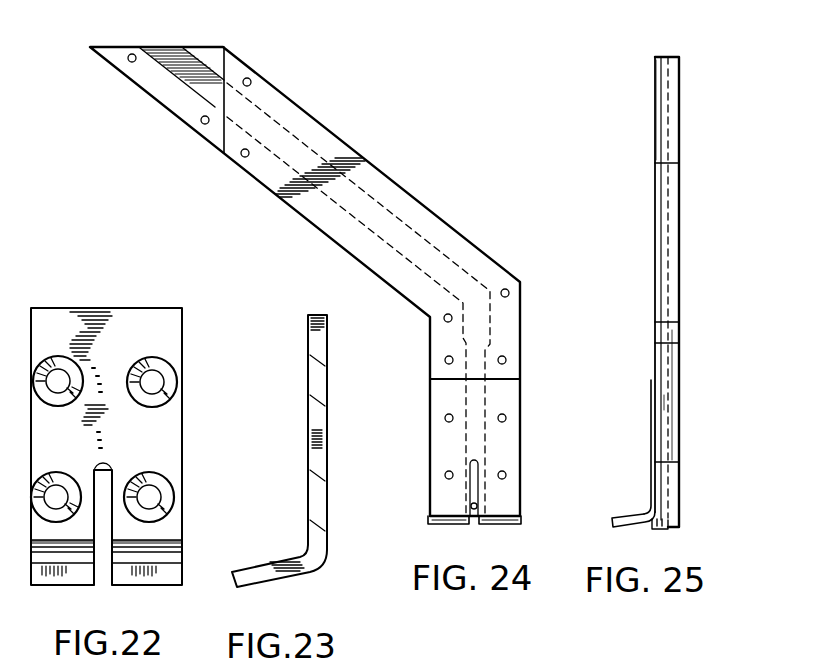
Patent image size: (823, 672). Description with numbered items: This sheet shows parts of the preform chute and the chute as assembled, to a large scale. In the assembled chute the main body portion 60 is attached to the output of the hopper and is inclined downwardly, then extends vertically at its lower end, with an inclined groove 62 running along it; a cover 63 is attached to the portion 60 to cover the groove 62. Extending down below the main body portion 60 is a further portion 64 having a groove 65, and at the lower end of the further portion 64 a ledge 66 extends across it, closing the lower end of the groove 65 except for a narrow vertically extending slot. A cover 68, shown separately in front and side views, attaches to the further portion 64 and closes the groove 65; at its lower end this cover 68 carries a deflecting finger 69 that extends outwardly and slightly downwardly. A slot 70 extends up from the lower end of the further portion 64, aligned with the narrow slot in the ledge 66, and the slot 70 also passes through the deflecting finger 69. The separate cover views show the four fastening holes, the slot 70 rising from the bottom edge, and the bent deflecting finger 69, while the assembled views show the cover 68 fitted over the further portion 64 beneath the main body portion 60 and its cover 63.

In FIG. 24, the main body portion 60 is at (218, 57).
In FIG. 25, the main body portion 60 is at (672, 152).
In FIG. 24, the inclined groove 62 is at (213, 82).
In FIG. 25, the inclined groove 62 is at (667, 100).
In FIG. 24, the cover 63 is at (297, 115).
In FIG. 25, the cover 63 is at (658, 205).
In FIG. 25, the further portion 64 is at (672, 373).
In FIG. 25, the groove 65 is at (665, 402).
In FIG. 25, the ledge 66 is at (660, 529).
In FIG. 22, the cover 68 is at (163, 446).
In FIG. 23, the cover 68 is at (310, 452).
In FIG. 24, the cover 68 is at (440, 434).
In FIG. 25, the cover 68 is at (652, 402).
In FIG. 22, the deflecting finger 69 is at (77, 578).
In FIG. 23, the deflecting finger 69 is at (270, 566).
In FIG. 24, the deflecting finger 69 is at (436, 522).
In FIG. 25, the deflecting finger 69 is at (628, 515).
In FIG. 22, the slot 70 is at (102, 558).
In FIG. 24, the slot 70 is at (473, 489).